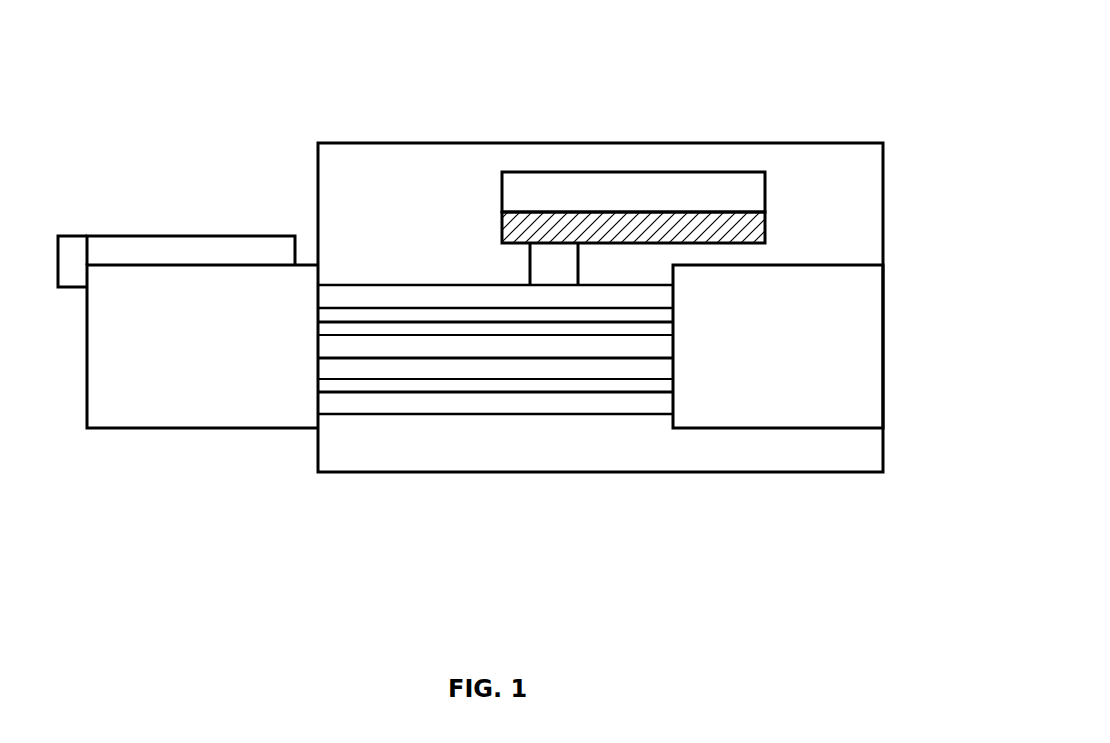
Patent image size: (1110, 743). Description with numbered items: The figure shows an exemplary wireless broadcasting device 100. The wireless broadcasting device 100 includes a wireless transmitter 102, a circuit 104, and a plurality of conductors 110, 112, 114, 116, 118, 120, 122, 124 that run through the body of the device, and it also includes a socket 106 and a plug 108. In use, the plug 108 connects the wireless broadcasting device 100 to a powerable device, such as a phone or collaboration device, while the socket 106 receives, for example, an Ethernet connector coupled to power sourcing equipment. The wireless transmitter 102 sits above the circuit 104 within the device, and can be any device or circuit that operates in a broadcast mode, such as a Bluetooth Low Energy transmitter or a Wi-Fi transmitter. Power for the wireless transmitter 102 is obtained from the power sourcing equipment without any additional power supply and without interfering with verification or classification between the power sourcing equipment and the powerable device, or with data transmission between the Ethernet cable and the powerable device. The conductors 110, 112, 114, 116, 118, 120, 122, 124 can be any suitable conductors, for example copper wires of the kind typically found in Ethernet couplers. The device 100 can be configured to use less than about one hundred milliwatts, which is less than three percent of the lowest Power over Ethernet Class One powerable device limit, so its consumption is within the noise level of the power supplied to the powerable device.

The wireless broadcasting device 100 is at (830, 53).
The wireless transmitter 102 is at (737, 193).
The circuit 104 is at (765, 230).
The socket 106 is at (903, 343).
The plug 108 is at (195, 413).
The conductor 110 is at (350, 285).
The conductor 112 is at (403, 308).
The conductor 114 is at (438, 322).
The conductor 116 is at (355, 335).
The conductor 118 is at (405, 358).
The conductor 120 is at (484, 379).
The conductor 122 is at (548, 392).
The conductor 124 is at (612, 414).